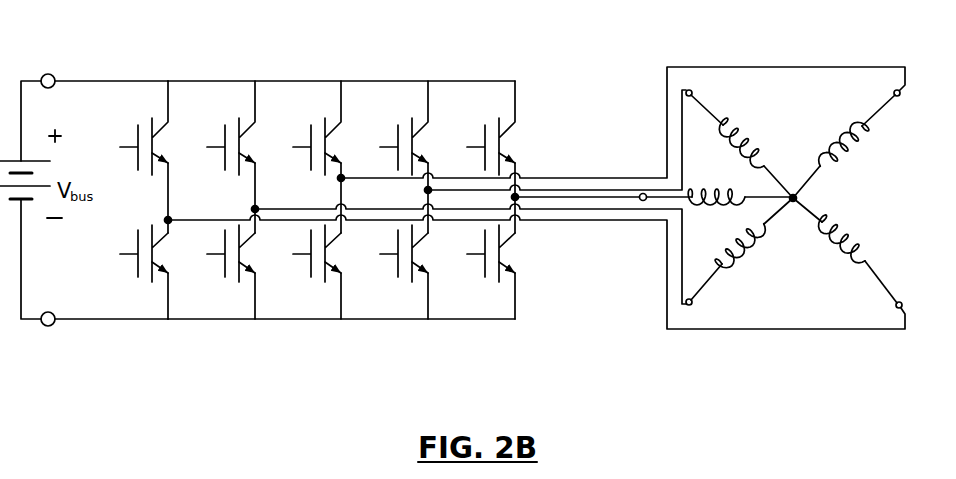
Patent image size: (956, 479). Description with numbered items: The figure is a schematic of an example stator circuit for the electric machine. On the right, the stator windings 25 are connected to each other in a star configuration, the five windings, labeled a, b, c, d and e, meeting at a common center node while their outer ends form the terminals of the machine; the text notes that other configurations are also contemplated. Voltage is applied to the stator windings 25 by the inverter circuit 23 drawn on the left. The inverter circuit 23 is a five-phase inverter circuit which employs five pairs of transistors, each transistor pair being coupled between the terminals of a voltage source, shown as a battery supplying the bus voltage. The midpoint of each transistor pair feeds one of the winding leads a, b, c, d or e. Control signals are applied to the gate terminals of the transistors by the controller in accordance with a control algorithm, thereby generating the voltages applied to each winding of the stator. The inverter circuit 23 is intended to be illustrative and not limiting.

The inverter circuit 23 is at (263, 79).
The stator windings 25 is at (794, 161).
The phase a winding a is at (740, 183).
The phase b winding b is at (742, 146).
The phase c winding c is at (844, 146).
The phase d winding d is at (845, 250).
The phase e winding e is at (742, 249).